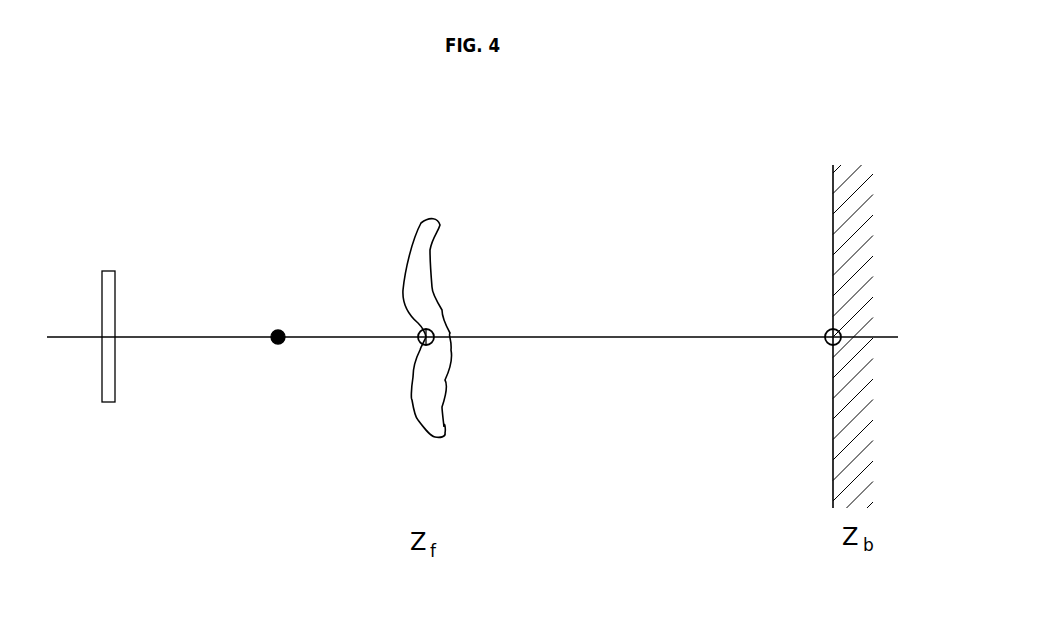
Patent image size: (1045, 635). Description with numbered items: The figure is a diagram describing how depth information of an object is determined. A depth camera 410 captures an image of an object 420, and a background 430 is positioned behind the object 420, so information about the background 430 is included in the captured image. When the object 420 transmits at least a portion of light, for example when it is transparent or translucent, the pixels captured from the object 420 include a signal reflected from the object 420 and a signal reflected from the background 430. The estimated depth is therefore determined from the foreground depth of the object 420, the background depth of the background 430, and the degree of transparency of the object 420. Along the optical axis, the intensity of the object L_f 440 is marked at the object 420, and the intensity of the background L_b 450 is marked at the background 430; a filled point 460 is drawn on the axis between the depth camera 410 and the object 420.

The depth camera 410 is at (109, 271).
The object 420 is at (430, 218).
The background 430 is at (851, 165).
The intensity of the object L_f 440 is at (373, 358).
The intensity of the background L_b 450 is at (790, 358).
The viewpoint 460 is at (278, 330).